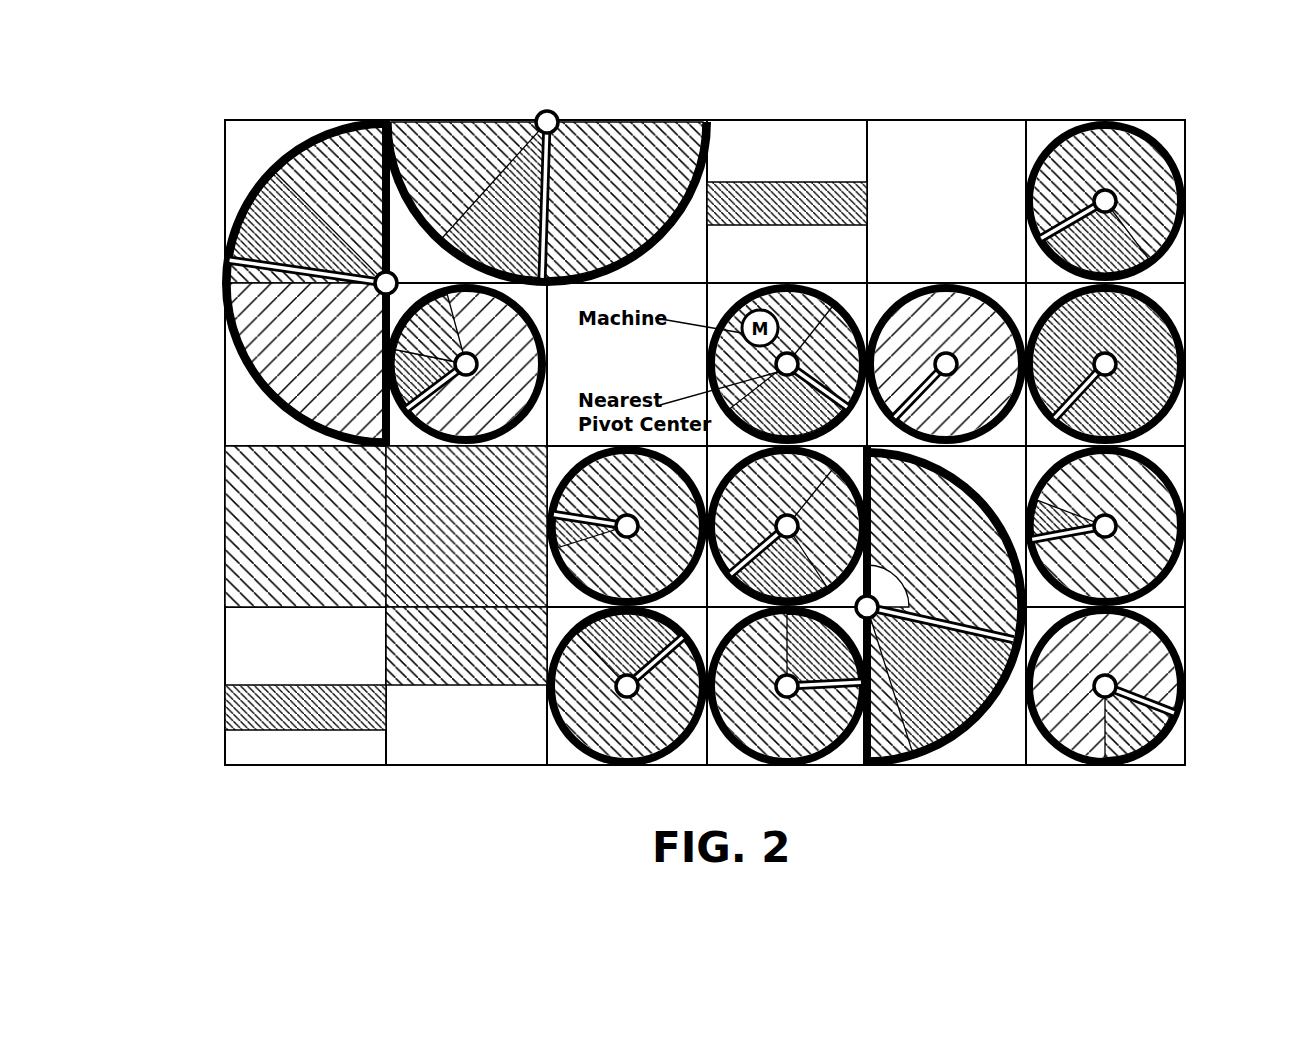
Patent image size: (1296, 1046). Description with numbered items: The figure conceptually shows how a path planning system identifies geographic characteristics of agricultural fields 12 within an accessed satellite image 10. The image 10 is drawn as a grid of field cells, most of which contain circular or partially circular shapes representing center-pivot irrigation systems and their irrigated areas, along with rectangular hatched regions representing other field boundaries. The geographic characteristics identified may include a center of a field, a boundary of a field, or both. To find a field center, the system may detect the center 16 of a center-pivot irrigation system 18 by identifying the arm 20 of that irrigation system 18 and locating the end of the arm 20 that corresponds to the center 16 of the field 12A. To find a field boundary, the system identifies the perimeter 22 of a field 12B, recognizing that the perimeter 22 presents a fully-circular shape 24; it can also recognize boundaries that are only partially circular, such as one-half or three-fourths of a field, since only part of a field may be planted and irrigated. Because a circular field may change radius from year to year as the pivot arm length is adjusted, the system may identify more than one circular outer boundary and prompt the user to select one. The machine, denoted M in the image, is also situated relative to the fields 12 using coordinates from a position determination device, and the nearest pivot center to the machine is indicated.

The satellite image 10 is at (258, 82).
The fields 12 is at (1178, 730).
The field 12A is at (1150, 203).
The field 12B is at (603, 764).
The center 16 is at (1113, 194).
The center-pivot irrigation system 18 is at (1133, 156).
The arm 20 is at (1030, 173).
The perimeter 22 is at (665, 757).
The fully-circular shape 24 is at (540, 740).